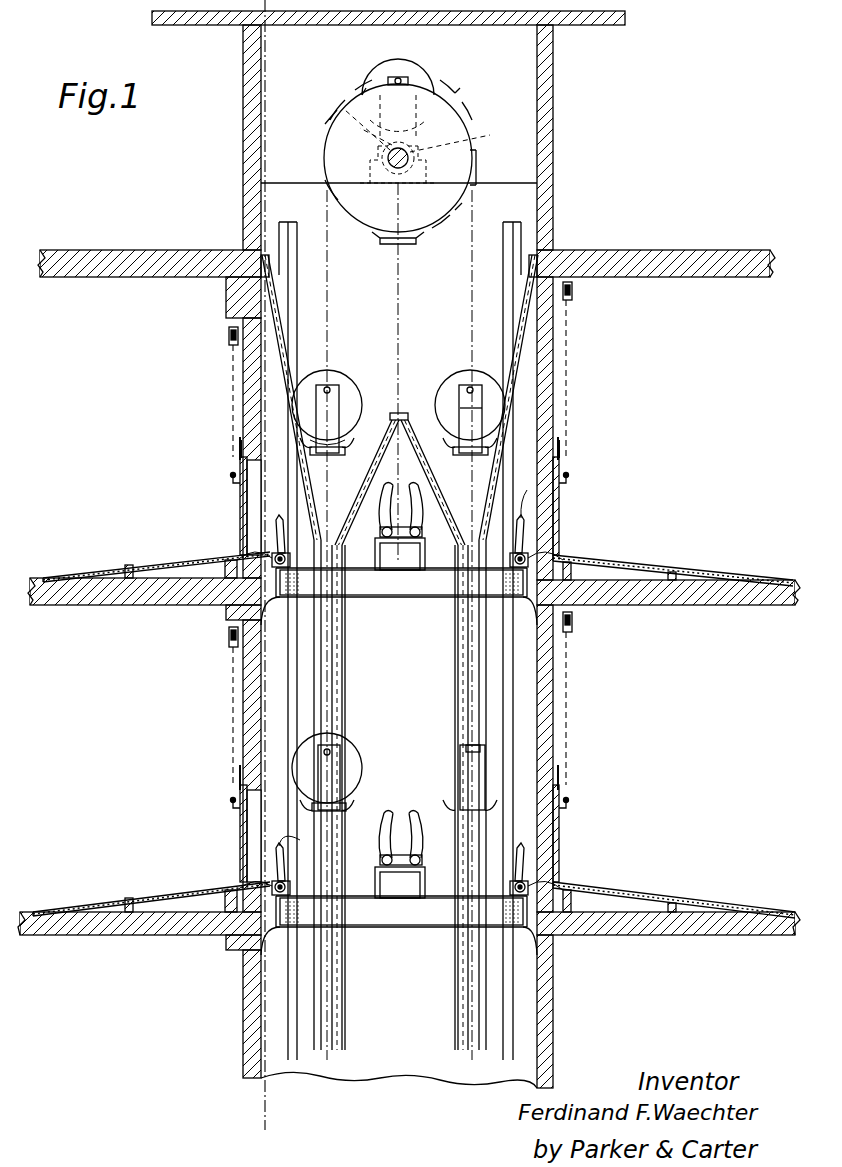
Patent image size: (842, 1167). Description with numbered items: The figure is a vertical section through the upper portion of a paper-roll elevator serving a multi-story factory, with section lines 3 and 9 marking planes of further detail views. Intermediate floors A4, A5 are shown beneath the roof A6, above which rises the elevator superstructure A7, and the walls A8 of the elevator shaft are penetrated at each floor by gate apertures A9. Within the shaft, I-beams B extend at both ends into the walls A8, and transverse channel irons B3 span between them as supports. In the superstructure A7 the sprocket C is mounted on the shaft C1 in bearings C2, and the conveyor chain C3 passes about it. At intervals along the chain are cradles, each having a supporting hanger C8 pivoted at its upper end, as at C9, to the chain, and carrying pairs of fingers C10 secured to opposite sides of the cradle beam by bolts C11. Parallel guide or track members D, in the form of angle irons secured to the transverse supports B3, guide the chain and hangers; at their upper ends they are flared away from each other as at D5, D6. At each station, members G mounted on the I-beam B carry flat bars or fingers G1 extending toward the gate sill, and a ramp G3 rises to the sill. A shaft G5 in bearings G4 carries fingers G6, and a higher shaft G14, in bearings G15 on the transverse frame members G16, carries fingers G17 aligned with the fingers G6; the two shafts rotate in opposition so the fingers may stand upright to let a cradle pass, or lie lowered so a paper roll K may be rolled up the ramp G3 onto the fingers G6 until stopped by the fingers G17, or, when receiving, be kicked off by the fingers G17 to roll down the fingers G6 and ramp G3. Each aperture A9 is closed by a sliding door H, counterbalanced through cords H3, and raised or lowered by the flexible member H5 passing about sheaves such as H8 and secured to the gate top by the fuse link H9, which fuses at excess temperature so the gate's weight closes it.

The section line 3- 3 is at (265, 1130).
The section line 9- 9 is at (464, 436).
The intermediate floor A4 is at (70, 935).
The intermediate floor A5 is at (85, 580).
The roof A6 is at (158, 232).
The elevator superstructure A7 is at (553, 130).
The walls of the elevator shaft A8 is at (245, 410).
The gate apertures A9 is at (252, 505).
The I-beams B is at (262, 600).
The transverse channel irons B3 is at (432, 590).
The sprocket C is at (455, 125).
The shaft C1 is at (386, 153).
The bearings C2 is at (462, 136).
The conveyor chain C3 is at (470, 272).
The supporting hanger C8 is at (398, 77).
The hanger pivot C9 is at (362, 765).
The fingers C10 is at (345, 108).
The bolts C11 is at (345, 462).
The guide or track members D is at (317, 1052).
The flared upper track end D5 is at (277, 368).
The flared upper track end D6 is at (400, 413).
The members G is at (512, 556).
The flat bars or fingers G1 is at (530, 555).
The ramp G3 is at (160, 548).
The bearings G4 is at (522, 518).
The shaft G5 is at (270, 556).
The fingers G6 is at (279, 518).
The shaft G14 is at (400, 718).
The bearings G15 is at (384, 530).
The transverse supporting frame members G16 is at (375, 553).
The fingers G17 is at (400, 490).
The sliding doors H is at (240, 535).
The cords or chains H3 is at (240, 440).
The flexible member H5 is at (233, 437).
The sheave H8 is at (229, 338).
The fuse link H9 is at (233, 475).
The paper roll K is at (425, 78).